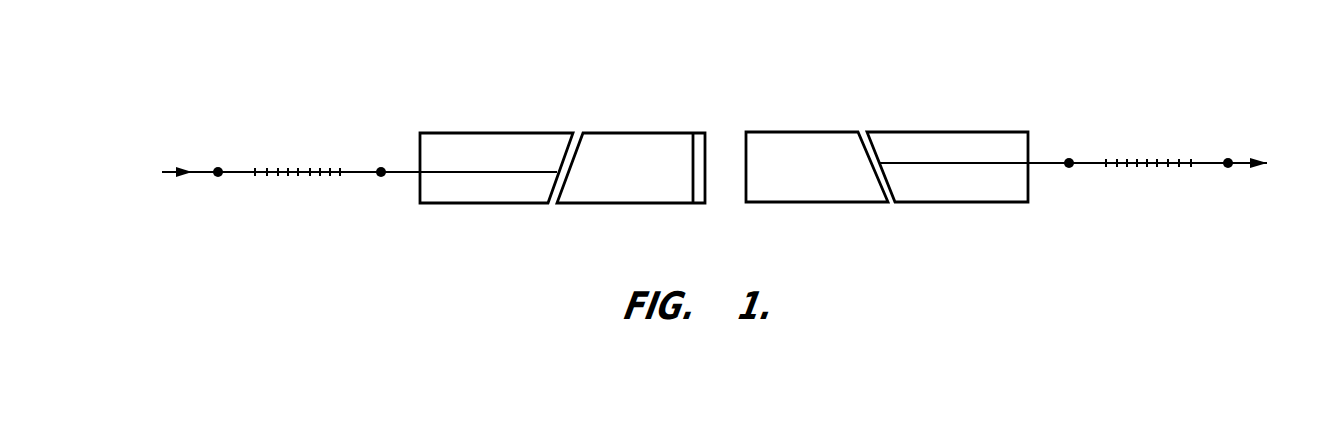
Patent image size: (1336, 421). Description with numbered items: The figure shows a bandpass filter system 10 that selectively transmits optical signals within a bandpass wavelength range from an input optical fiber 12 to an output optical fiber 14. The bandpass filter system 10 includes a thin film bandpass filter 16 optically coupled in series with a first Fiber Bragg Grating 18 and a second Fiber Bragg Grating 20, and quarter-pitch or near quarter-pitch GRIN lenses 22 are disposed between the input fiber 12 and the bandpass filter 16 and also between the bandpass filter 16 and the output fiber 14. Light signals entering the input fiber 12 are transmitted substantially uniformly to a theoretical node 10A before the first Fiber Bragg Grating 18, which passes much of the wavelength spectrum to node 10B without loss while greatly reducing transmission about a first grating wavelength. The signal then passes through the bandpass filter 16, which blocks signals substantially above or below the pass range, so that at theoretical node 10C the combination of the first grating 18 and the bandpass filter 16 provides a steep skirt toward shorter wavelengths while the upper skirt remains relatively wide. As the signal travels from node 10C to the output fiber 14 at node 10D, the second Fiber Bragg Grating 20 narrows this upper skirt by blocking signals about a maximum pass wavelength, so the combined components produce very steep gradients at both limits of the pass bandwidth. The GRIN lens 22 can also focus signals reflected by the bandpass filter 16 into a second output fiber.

The bandpass filter system 10 is at (1050, 62).
The input optical fiber 12 is at (190, 172).
The output optical fiber 14 is at (1247, 164).
The thin film bandpass filter 16 is at (700, 131).
The first Fiber Bragg Grating 18 is at (321, 165).
The second Fiber Bragg Grating 20 is at (1127, 158).
The GRIN lens 22 is at (602, 143).
The theoretical node 10A is at (218, 176).
The theoretical node 10B is at (381, 176).
The theoretical node 10C is at (1069, 167).
The theoretical node 10D is at (1228, 167).